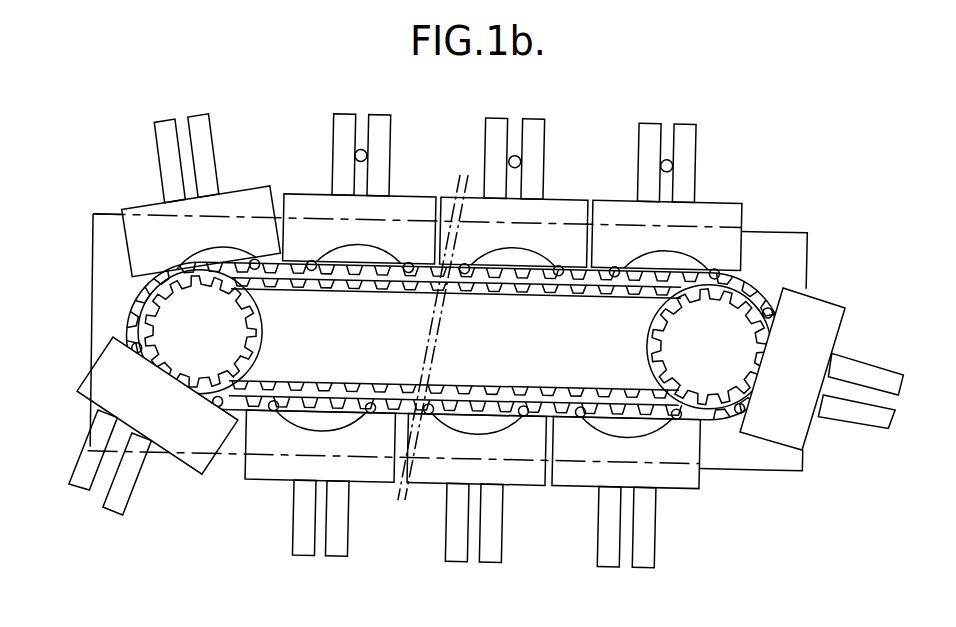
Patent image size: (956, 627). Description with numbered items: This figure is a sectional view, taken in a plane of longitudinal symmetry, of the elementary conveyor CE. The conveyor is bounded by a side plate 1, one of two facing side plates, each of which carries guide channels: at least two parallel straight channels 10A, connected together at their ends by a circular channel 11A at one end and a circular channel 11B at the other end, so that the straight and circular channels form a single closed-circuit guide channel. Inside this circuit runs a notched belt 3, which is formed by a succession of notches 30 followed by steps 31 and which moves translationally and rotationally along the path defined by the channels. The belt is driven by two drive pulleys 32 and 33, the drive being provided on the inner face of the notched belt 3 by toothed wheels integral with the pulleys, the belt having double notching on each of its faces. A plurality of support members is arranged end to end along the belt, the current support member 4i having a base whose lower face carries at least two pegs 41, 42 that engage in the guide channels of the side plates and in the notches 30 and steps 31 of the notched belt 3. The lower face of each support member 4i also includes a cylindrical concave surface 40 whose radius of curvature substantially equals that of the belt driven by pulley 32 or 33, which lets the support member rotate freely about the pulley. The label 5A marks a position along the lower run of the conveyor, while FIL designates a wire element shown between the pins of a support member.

The side plate 1 is at (720, 217).
The notched belt 3 is at (168, 276).
The current support member 4i is at (541, 212).
The lower module 5A is at (498, 411).
The parallel straight channel 10A is at (278, 267).
The circular channel 11A is at (134, 304).
The circular channel 11B is at (742, 282).
The notch 30 is at (694, 409).
The step 31 is at (714, 408).
The drive pulley 32 is at (222, 333).
The drive pulley 33 is at (688, 326).
The cylindrical concave surface 40 is at (648, 249).
The peg 41 is at (308, 267).
The peg 42 is at (405, 266).
The elementary conveyor CE is at (244, 414).
The wire FIL is at (668, 159).